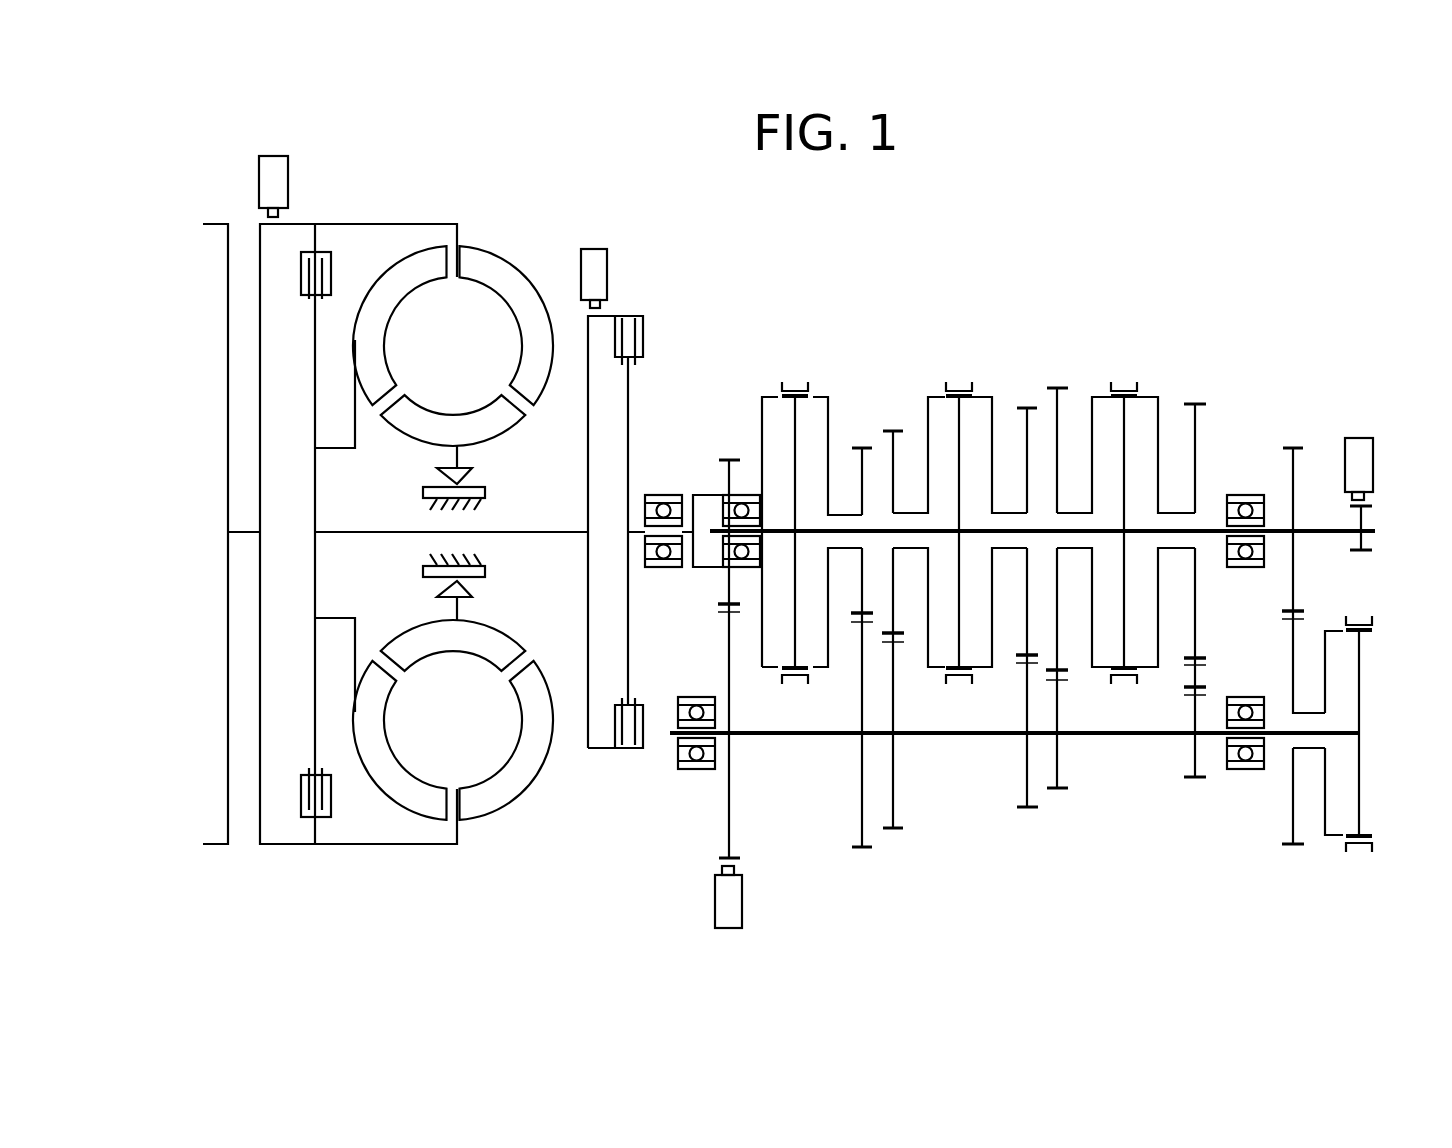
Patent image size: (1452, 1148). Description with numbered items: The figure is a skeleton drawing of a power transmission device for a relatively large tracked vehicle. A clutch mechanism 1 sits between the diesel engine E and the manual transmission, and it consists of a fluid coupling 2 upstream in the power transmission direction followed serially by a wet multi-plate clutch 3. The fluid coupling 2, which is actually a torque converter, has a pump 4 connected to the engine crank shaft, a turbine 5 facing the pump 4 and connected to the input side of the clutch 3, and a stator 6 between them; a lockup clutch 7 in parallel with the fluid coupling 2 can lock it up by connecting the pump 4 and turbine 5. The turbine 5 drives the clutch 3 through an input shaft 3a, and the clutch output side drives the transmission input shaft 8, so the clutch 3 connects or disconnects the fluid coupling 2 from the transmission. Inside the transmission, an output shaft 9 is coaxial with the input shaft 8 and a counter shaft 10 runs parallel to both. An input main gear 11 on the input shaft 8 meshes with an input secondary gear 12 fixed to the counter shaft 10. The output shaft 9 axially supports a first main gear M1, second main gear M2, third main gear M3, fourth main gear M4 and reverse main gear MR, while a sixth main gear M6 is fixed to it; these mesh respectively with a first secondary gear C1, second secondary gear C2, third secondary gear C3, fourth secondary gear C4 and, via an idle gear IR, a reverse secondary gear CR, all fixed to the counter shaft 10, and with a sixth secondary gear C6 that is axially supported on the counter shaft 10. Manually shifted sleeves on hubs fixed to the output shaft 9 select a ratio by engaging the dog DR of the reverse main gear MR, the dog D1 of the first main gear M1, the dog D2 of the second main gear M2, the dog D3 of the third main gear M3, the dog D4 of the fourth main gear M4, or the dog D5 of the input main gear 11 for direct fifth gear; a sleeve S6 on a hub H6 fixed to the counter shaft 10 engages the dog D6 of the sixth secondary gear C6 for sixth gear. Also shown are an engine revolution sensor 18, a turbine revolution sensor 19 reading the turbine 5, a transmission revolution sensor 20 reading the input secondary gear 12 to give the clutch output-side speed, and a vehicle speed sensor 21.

The clutch mechanism 1 is at (506, 160).
The fluid coupling 2 is at (456, 205).
The wet multi-plate clutch 3 is at (650, 297).
The input shaft 3a is at (527, 540).
The pump 4 is at (520, 292).
The turbine 5 is at (385, 287).
The stator 6 is at (495, 430).
The lockup clutch 7 is at (331, 243).
The input shaft 8 is at (640, 530).
The output shaft 9 is at (813, 527).
The counter shaft 10 is at (806, 738).
The input main gear 11 is at (732, 643).
The input secondary gear 12 is at (749, 853).
The engine revolution sensor 18 is at (277, 172).
The turbine revolution sensor 19 is at (596, 255).
The transmission revolution sensor 20 is at (716, 907).
The vehicle speed sensor 21 is at (1366, 452).
The engine E is at (228, 221).
The dog D4 is at (810, 393).
The dog D5 is at (777, 398).
The fourth main gear M4 is at (859, 467).
The third main gear M3 is at (902, 457).
The dog D3 is at (928, 397).
The dog D2 is at (974, 393).
The second main gear M2 is at (1022, 445).
The first main gear M1 is at (1062, 435).
The dog D1 is at (1105, 397).
The dog DR is at (1140, 392).
The reverse main gear MR is at (1203, 444).
The idle gear IR is at (1200, 673).
The reverse secondary gear CR is at (1196, 796).
The first secondary gear C1 is at (1064, 687).
The second secondary gear C2 is at (1030, 697).
The third secondary gear C3 is at (897, 708).
The fourth secondary gear C4 is at (865, 719).
The sixth main gear M6 is at (1300, 565).
The sixth secondary gear C6 is at (1302, 817).
The dog D6 is at (1343, 631).
The sleeve S6 is at (1360, 618).
The hub H6 is at (1361, 677).